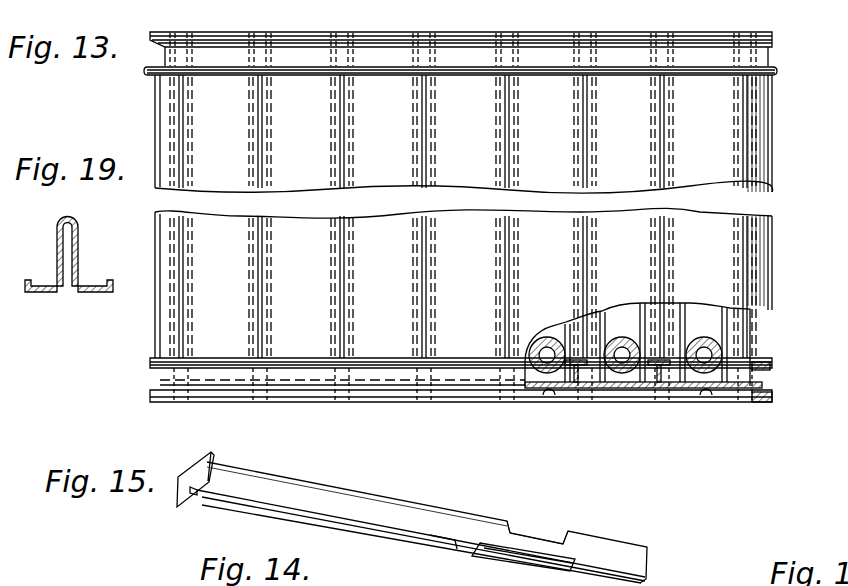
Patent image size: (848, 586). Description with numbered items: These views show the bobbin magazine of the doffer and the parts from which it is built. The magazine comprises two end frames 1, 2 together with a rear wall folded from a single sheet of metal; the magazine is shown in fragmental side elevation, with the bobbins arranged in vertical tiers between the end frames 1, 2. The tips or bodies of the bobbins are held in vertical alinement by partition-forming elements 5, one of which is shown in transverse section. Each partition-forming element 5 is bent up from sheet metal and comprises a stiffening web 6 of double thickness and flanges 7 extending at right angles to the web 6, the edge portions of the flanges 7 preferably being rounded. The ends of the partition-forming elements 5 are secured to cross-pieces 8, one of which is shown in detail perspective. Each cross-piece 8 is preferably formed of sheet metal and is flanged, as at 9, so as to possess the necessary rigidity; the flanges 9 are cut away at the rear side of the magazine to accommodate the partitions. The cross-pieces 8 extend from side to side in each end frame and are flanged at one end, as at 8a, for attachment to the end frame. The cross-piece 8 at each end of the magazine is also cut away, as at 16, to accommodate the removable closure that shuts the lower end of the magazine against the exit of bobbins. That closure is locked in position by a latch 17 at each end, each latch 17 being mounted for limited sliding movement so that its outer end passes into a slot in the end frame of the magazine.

In FIG. 13, the end frame 1 is at (775, 74).
In FIG. 13, the end frame 2 is at (771, 365).
In FIG. 19, the partition-forming element 5 is at (69, 264).
In FIG. 19, the stiffening web 6 is at (79, 228).
In FIG. 19, the flanges 7 is at (33, 293).
In FIG. 13, the cross-piece 8 is at (577, 360).
In FIG. 15, the cross-piece 8 is at (418, 522).
In FIG. 15, the flange of cross-piece 8a is at (180, 476).
In FIG. 15, the flanges of cross-piece 9 is at (352, 518).
In FIG. 15, the cut-away portion 16 is at (533, 528).
In FIG. 13, the latch 17 is at (672, 402).